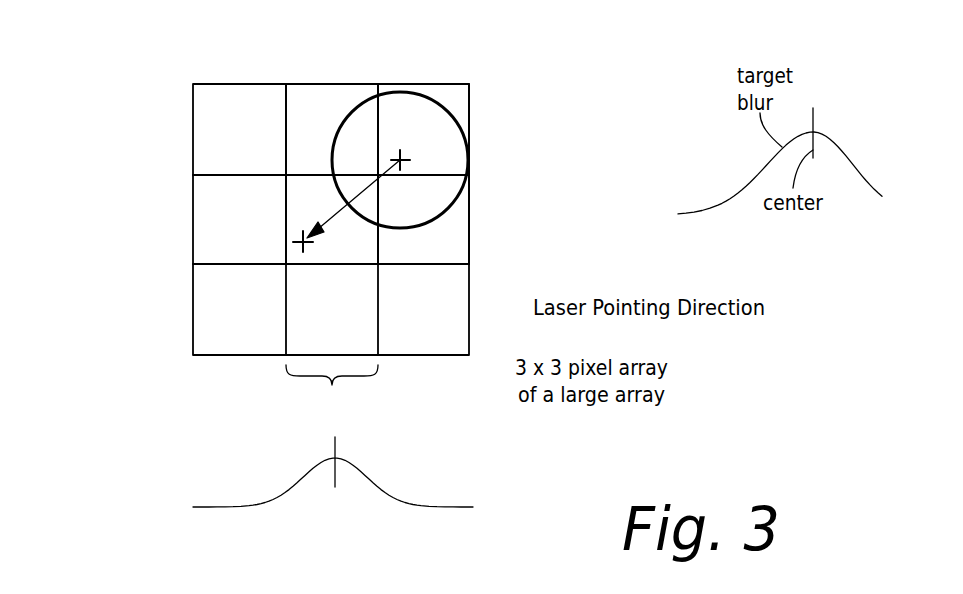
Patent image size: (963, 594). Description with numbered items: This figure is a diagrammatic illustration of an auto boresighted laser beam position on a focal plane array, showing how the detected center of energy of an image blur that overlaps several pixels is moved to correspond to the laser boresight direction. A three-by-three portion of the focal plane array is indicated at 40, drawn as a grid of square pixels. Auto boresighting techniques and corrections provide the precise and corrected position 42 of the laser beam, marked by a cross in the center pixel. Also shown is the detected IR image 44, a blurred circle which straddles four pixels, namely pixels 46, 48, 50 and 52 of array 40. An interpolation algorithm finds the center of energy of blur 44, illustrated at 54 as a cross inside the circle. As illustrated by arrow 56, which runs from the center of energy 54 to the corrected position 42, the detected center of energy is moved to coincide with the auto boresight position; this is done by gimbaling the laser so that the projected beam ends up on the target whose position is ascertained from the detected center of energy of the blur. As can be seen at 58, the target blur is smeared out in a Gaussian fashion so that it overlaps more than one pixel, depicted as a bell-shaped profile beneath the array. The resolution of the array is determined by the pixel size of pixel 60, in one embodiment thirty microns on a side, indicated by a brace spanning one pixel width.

The focal plane array portion 40 is at (213, 75).
The auto boresight corrected position 42 is at (296, 239).
The detected IR image 44 is at (430, 93).
The pixel 46 is at (325, 115).
The pixel 48 is at (469, 110).
The pixel 50 is at (458, 258).
The pixel 52 is at (367, 258).
The center of energy of blur 54 is at (400, 160).
The arrow 56 is at (363, 191).
The target blur 58 is at (363, 472).
The pixel 60 is at (331, 391).